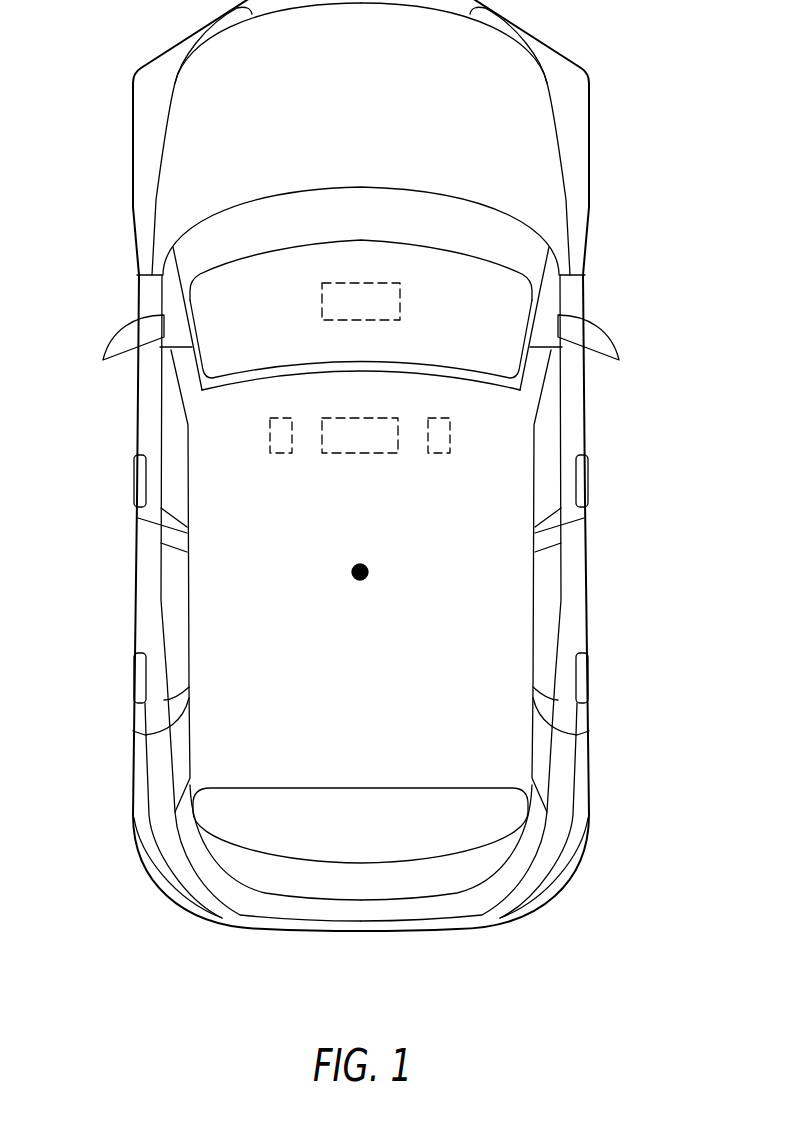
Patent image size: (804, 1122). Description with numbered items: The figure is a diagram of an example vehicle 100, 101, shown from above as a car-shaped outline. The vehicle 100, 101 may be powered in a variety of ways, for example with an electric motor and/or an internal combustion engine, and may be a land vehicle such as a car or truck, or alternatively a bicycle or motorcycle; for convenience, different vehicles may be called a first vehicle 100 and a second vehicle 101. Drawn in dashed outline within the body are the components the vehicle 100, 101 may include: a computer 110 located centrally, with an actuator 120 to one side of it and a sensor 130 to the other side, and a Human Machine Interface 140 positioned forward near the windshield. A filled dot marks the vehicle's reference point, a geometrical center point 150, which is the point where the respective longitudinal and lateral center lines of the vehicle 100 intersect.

The vehicle 100 is at (361, 465).
The vehicle 101 is at (400, 748).
The computer 110 is at (340, 418).
The actuator 120 is at (270, 435).
The sensor 130 is at (450, 435).
The Human Machine Interface 140 is at (377, 283).
The geometrical center point 150 is at (354, 581).